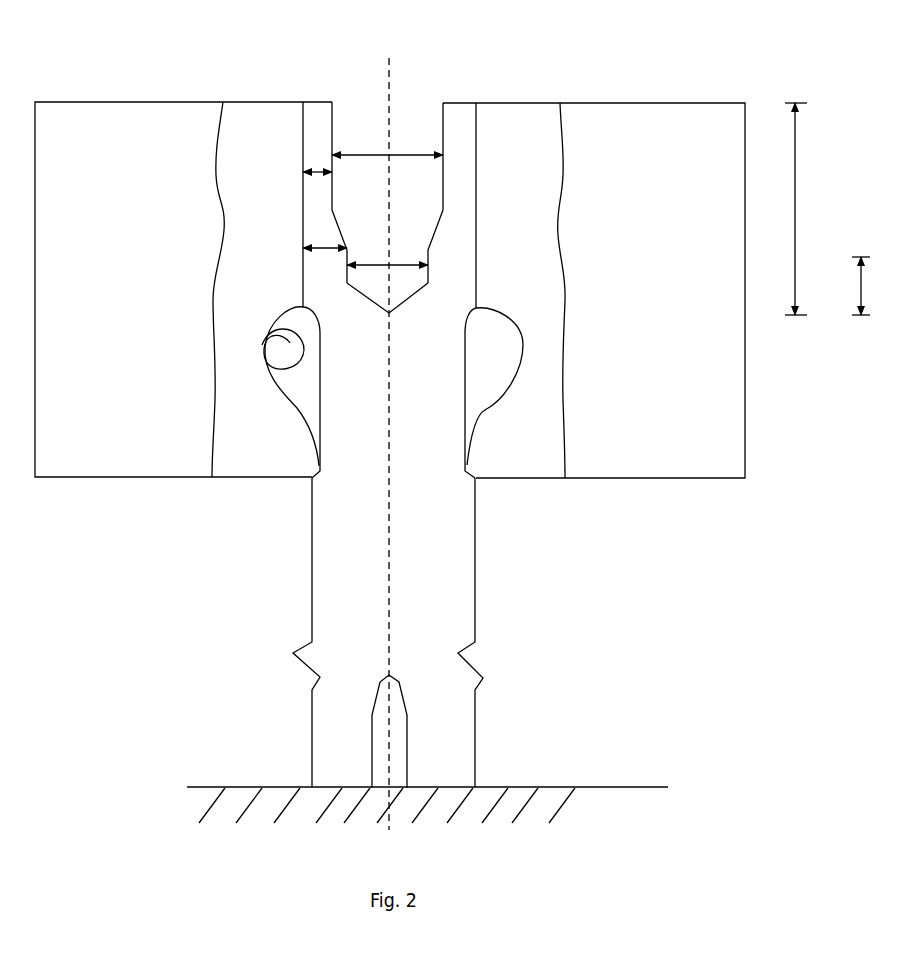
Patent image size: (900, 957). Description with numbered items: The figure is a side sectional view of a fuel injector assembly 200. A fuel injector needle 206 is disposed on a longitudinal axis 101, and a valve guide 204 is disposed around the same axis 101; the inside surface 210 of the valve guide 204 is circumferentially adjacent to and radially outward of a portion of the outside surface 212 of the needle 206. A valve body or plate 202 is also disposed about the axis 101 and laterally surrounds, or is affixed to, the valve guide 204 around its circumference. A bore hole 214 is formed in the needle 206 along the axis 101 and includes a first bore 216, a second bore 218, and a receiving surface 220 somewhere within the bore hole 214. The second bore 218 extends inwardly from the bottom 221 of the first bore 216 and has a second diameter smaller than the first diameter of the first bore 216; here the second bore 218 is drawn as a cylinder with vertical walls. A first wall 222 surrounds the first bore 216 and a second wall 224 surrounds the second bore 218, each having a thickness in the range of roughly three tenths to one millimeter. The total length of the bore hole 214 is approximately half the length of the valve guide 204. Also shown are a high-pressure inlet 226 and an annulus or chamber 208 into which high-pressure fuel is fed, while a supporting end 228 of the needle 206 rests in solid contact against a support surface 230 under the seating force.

The fuel injector assembly 200 is at (200, 63).
The longitudinal axis 101 is at (388, 430).
The plate 202 is at (118, 227).
The valve guide 204 is at (541, 174).
The fuel injector needle 206 is at (380, 542).
The annulus 208 is at (300, 388).
The inside surface 210 is at (476, 205).
The outside surface 212 is at (480, 278).
The bore hole 214 is at (370, 100).
The first bore 216 is at (346, 122).
The second bore 218 is at (405, 280).
The receiving surface 220 is at (440, 225).
The bottom 221 is at (334, 205).
The first wall 222 is at (312, 138).
The second wall 224 is at (312, 276).
The high-pressure inlet 226 is at (280, 335).
The supporting end 228 is at (463, 717).
The support surface 230 is at (403, 856).